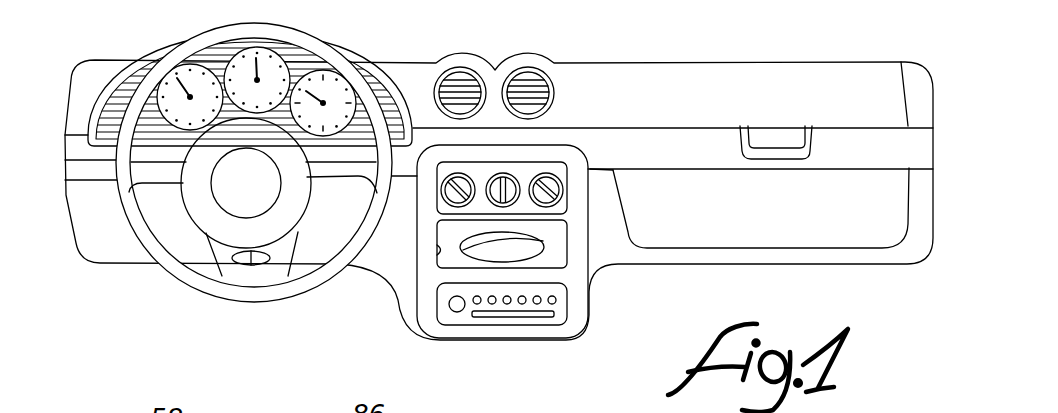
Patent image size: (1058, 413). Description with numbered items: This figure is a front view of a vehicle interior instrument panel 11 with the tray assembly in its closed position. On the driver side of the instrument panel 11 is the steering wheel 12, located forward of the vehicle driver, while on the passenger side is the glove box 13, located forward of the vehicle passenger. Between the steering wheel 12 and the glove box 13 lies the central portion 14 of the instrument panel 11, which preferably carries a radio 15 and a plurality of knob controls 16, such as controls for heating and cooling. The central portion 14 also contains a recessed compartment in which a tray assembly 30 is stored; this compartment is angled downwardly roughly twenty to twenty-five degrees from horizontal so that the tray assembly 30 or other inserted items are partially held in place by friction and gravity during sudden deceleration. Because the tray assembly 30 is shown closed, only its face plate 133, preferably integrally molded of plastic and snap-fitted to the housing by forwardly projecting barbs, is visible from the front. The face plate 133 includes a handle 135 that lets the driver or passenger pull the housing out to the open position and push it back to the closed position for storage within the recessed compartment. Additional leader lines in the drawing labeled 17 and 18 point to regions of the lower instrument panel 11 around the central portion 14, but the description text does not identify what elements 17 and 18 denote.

The instrument panel 11 is at (430, 53).
The steering wheel 12 is at (312, 45).
The glove box 13 is at (876, 238).
The central portion 14 is at (604, 67).
The radio 15 is at (563, 306).
The knob controls 16 is at (560, 172).
The center console 17 is at (418, 251).
The glove box panel 18 is at (553, 262).
The tray assembly 30 is at (562, 231).
The face plate 133 is at (557, 285).
The handle 135 is at (474, 249).